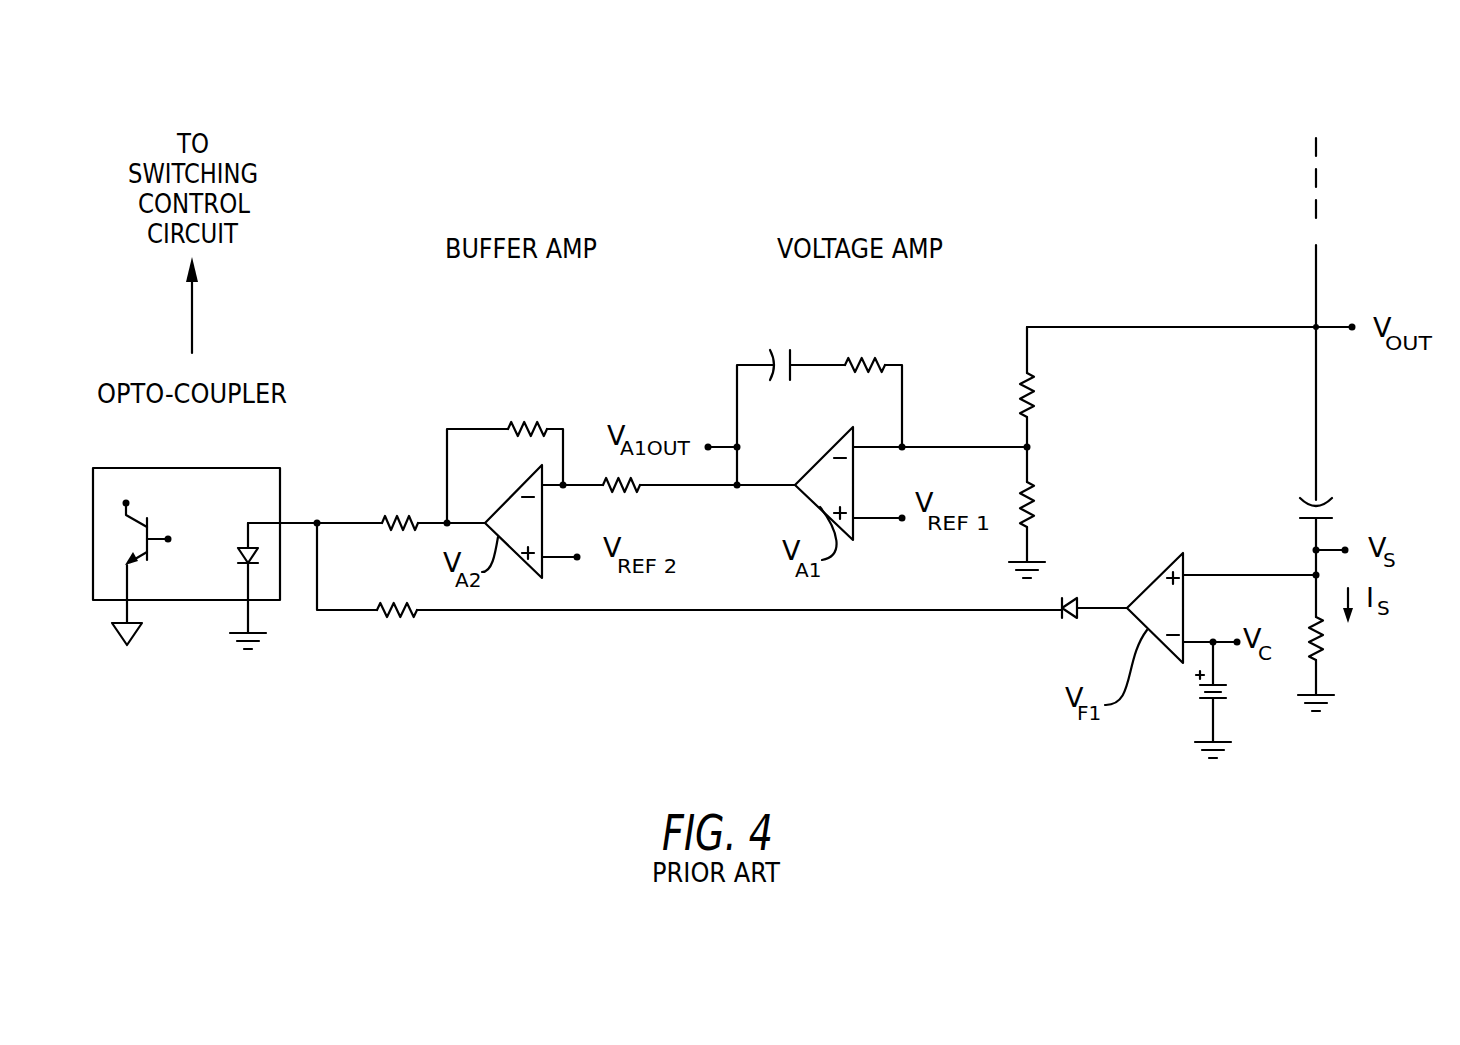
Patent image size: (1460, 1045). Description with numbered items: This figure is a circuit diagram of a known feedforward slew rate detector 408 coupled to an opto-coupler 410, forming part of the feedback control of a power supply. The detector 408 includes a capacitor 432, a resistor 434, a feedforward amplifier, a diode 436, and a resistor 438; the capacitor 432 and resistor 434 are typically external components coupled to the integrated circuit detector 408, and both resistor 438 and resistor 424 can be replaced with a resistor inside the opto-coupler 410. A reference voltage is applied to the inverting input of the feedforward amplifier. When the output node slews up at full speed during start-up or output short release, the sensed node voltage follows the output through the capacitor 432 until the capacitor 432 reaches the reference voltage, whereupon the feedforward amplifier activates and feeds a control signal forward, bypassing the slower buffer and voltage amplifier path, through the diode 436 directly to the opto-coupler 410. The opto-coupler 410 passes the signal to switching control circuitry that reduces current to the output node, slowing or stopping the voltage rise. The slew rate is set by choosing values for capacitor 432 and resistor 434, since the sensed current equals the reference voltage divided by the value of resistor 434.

The feedforward slew rate detector 408 is at (1132, 137).
The opto-coupler 410 is at (205, 600).
The resistor 424 is at (418, 518).
The capacitor 432 is at (1325, 503).
The resistor 434 is at (1322, 635).
The diode 436 is at (1068, 600).
The resistor 438 is at (387, 614).